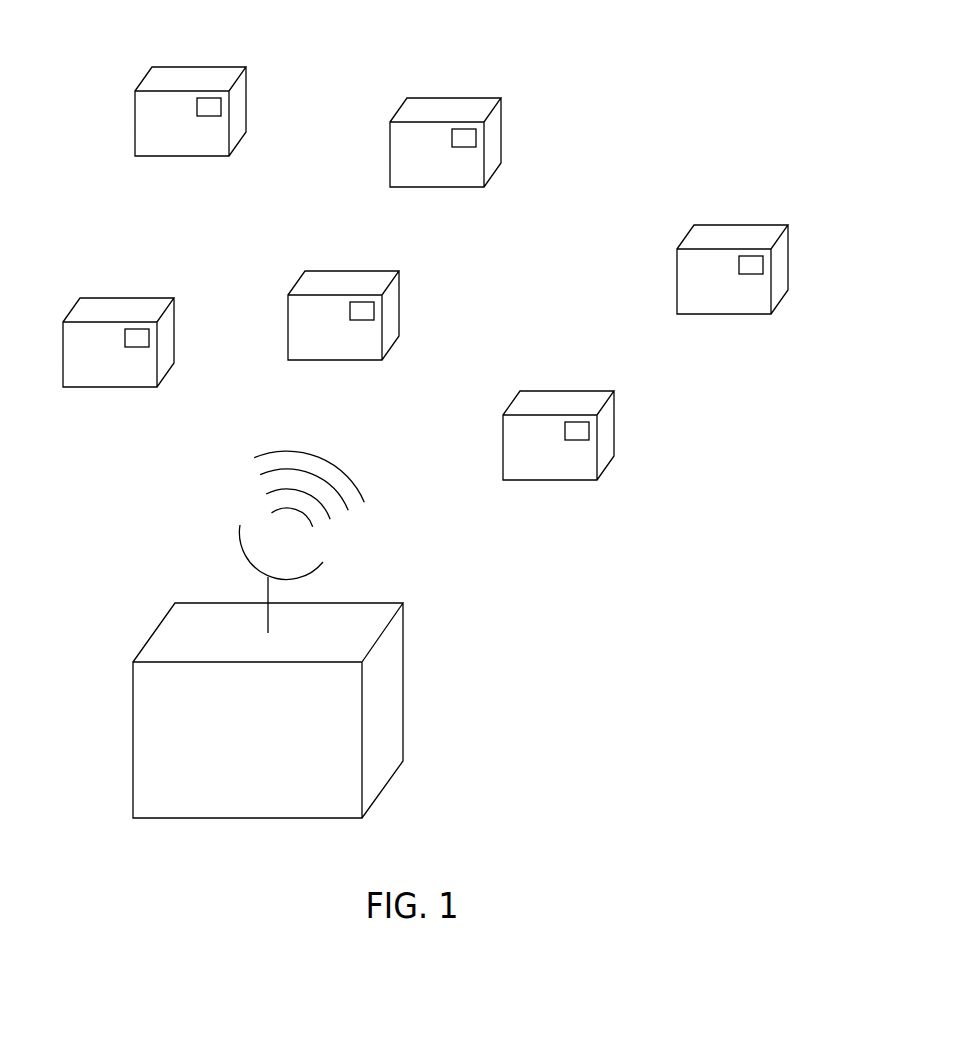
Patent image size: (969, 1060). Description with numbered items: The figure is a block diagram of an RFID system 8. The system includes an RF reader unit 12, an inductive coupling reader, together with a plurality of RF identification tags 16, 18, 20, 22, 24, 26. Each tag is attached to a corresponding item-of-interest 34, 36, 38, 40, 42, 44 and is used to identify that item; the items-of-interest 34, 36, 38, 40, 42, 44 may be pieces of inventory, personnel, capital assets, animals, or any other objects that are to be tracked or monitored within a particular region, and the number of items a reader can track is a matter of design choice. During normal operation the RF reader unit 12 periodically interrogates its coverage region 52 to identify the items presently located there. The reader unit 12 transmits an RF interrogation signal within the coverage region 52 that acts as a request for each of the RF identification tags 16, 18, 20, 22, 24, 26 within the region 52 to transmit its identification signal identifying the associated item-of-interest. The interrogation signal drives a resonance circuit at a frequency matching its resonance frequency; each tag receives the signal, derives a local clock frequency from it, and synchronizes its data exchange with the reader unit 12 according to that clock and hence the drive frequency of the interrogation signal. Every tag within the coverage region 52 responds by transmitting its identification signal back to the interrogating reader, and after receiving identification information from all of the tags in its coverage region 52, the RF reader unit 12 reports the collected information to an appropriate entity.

The RFID system 8 is at (128, 48).
The RF reader unit 12 is at (170, 632).
The RF identification tag 16 is at (213, 106).
The RF identification tag 18 is at (468, 137).
The RF identification tag 20 is at (755, 264).
The RF identification tag 22 is at (581, 430).
The RF identification tag 24 is at (366, 310).
The RF identification tag 26 is at (141, 337).
The item-of-interest 34 is at (148, 127).
The item-of-interest 36 is at (403, 158).
The item-of-interest 38 is at (690, 285).
The item-of-interest 40 is at (516, 451).
The item-of-interest 42 is at (301, 331).
The item-of-interest 44 is at (76, 358).
The coverage region 52 is at (662, 42).